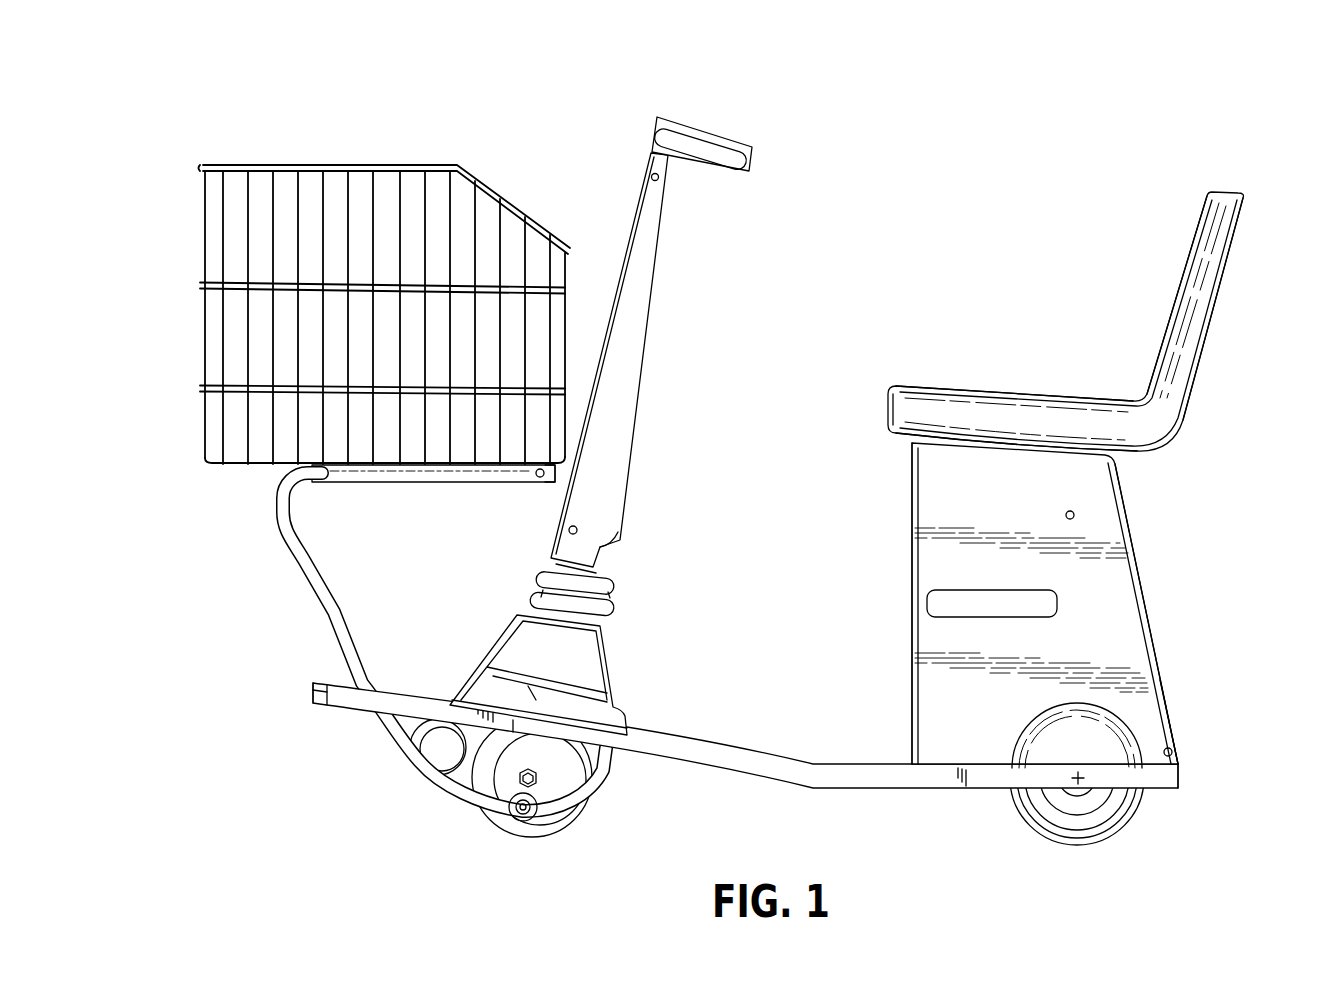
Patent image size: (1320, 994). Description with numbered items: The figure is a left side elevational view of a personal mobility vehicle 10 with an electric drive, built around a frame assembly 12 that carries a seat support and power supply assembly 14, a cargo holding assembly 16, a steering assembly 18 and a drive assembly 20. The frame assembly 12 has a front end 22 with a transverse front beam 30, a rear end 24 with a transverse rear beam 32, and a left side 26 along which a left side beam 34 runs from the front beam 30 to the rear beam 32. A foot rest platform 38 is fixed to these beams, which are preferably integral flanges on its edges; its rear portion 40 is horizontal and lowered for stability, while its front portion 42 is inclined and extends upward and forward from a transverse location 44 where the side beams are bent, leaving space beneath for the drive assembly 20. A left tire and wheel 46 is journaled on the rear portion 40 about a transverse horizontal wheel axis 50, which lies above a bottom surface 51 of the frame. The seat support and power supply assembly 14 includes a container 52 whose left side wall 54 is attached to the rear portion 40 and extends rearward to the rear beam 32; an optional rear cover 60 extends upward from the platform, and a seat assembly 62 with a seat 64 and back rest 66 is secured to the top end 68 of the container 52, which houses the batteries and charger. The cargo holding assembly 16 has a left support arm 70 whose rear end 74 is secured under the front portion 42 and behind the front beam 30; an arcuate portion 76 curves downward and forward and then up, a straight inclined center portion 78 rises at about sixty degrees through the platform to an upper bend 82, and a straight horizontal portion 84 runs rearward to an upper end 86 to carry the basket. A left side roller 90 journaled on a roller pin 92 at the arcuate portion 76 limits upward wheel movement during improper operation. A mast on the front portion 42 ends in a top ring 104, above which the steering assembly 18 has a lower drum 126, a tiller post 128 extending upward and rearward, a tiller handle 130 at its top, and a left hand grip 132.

The personal mobility vehicle 10 is at (907, 184).
The frame assembly 12 is at (720, 708).
The seat support and power supply assembly 14 is at (1157, 504).
The cargo holding assembly 16 is at (344, 134).
The steering assembly 18 is at (664, 358).
The drive assembly 20 is at (400, 795).
The front end 22 is at (313, 690).
The rear end 24 is at (1178, 768).
The left side 26 is at (868, 790).
The transverse front beam 30 is at (313, 703).
The transverse rear beam 32 is at (1180, 782).
The left side beam 34 is at (778, 778).
The foot rest platform 38 is at (800, 758).
The rear portion 40 is at (985, 763).
The front portion 42 is at (778, 764).
The transverse location 44 is at (818, 762).
The left tire and wheel 46 is at (1077, 845).
The wheel axis 50 is at (1080, 778).
The bottom surface 51 is at (997, 790).
The container 52 is at (912, 523).
The left side wall 54 is at (1131, 622).
The rear cover 60 is at (1168, 706).
The seat assembly 62 is at (1233, 178).
The seat 64 is at (1032, 393).
The back rest 66 is at (1183, 266).
The top end 68 is at (1090, 450).
The left support arm 70 is at (305, 583).
The rear end 74 is at (617, 762).
The arcuate portion 76 is at (594, 808).
The straight inclined center portion 78 is at (327, 608).
The upper bend 82 is at (285, 496).
The straight horizontal portion 84 is at (477, 483).
The upper end 86 is at (548, 483).
The left side roller 90 is at (518, 820).
The roller pin 92 is at (530, 814).
The top ring 104 is at (615, 620).
The lower drum 126 is at (614, 592).
The tiller post 128 is at (631, 468).
The tiller handle 130 is at (676, 127).
The left hand grip 132 is at (712, 156).